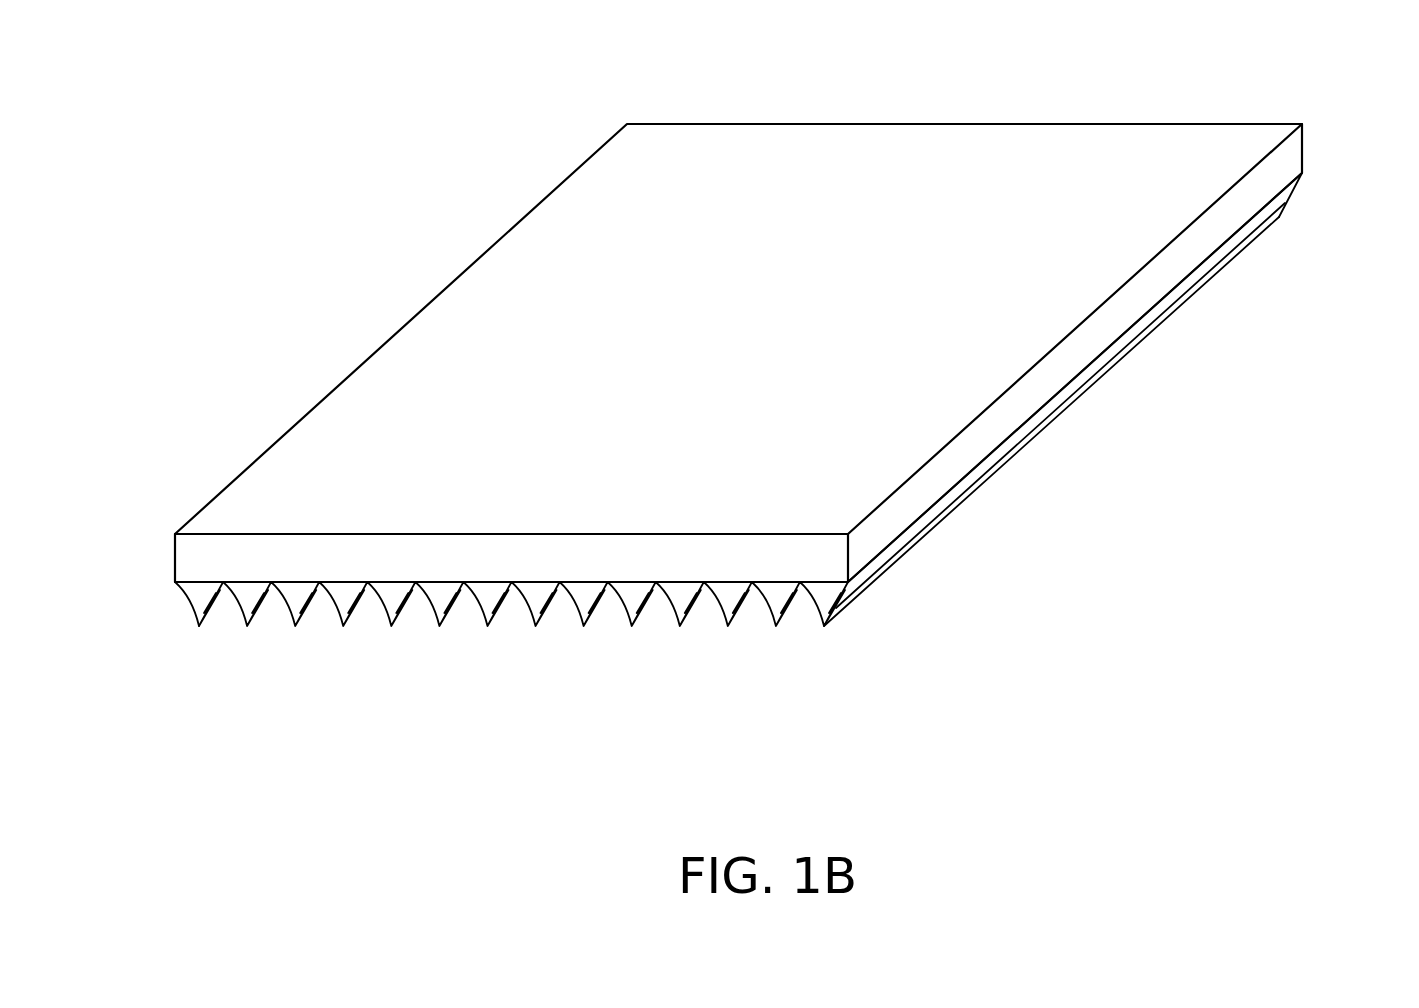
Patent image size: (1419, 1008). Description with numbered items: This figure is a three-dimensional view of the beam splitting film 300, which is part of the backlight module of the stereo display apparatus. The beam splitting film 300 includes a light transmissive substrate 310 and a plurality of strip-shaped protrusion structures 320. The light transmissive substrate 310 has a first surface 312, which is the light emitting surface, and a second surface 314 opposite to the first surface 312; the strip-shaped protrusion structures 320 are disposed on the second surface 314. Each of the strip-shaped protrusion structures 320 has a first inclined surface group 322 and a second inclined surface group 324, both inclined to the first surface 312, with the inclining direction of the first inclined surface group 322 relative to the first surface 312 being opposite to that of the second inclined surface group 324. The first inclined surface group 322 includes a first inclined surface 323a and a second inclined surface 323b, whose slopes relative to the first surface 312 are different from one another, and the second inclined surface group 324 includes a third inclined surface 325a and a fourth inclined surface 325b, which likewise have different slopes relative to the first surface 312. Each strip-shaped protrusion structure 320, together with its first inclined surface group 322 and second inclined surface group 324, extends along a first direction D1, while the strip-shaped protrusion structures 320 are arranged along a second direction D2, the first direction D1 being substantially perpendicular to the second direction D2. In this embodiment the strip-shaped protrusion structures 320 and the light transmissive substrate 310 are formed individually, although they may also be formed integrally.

The beam splitting film 300 is at (1382, 653).
The light transmissive substrate 310 is at (794, 380).
The first surface 312 is at (1030, 138).
The second surface 314 is at (672, 590).
The strip-shaped protrusion structures 320 is at (470, 685).
The first inclined surface group 322 is at (164, 685).
The first inclined surface 323a is at (183, 595).
The second inclined surface 323b is at (198, 622).
The second inclined surface group 324 is at (1054, 483).
The third inclined surface 325a is at (872, 566).
The fourth inclined surface 325b is at (950, 737).
The first direction D1 is at (1055, 477).
The second direction D2 is at (1055, 477).